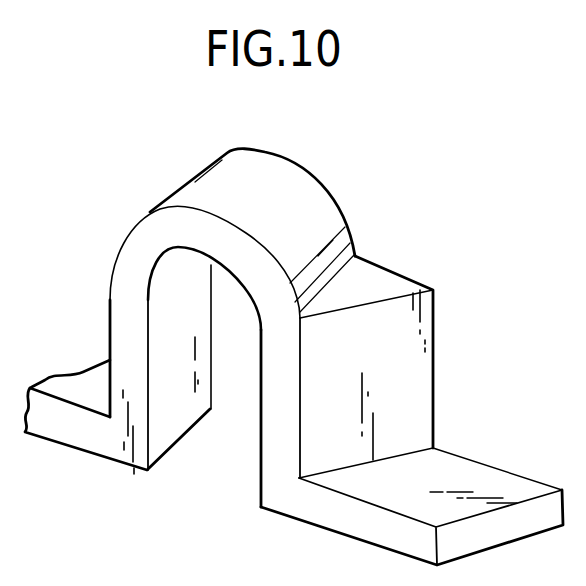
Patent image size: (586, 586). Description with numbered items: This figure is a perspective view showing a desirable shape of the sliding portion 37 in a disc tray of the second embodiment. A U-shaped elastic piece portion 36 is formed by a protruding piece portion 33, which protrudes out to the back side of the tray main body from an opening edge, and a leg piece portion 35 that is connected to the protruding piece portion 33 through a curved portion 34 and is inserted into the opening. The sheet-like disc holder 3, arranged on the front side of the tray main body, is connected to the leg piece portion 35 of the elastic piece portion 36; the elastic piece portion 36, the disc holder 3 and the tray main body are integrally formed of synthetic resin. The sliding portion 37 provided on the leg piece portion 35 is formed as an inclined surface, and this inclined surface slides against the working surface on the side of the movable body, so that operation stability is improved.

The disc holder 3 is at (330, 510).
The protruding piece portion 33 is at (110, 315).
The curved portion 34 is at (280, 175).
The leg piece portion 35 is at (260, 432).
The elastic piece portion 36 is at (348, 181).
The sliding portion 37 is at (408, 386).